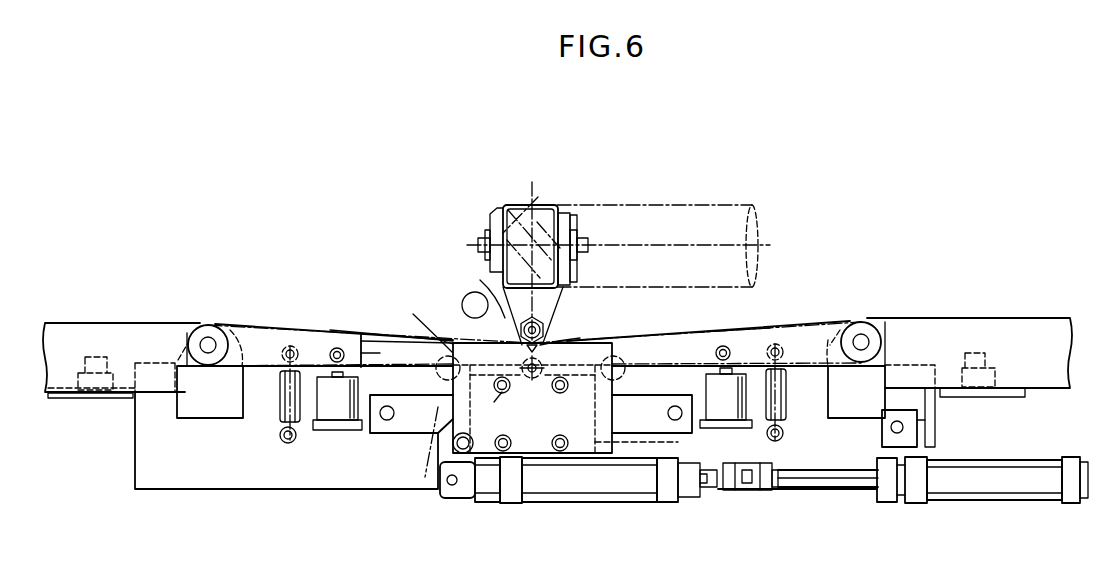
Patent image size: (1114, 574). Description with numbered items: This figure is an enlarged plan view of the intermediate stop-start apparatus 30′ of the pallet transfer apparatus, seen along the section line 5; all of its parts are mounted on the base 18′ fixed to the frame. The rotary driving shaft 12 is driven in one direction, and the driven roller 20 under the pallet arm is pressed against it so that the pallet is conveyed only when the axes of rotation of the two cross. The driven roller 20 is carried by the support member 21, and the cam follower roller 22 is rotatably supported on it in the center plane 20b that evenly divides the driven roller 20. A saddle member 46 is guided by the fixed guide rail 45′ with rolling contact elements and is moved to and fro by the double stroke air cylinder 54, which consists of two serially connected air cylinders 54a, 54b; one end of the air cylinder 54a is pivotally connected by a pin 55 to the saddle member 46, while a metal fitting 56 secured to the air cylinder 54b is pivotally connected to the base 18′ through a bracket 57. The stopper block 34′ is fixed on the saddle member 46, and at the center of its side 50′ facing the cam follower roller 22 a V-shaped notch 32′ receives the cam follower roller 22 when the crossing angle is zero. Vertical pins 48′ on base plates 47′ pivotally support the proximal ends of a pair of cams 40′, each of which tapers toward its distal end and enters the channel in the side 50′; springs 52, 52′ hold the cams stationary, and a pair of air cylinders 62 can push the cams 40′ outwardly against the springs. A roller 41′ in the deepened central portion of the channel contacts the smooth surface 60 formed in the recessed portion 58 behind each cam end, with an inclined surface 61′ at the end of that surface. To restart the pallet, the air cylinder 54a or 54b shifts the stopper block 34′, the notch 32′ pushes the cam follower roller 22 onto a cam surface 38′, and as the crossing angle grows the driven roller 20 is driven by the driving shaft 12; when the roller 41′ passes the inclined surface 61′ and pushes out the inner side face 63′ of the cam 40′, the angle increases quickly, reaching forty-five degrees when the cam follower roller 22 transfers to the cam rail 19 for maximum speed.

The section line 5 is at (532, 157).
The rotary driving shaft 12 is at (657, 206).
The base 18′ is at (251, 478).
The cam rail 19 is at (167, 320).
The driven roller 20 is at (518, 210).
The center plane 20b is at (534, 190).
The support member 21 is at (568, 268).
The cam follower roller 22 is at (548, 327).
The stop-start apparatus 30′ is at (632, 310).
The V-shaped notch 32′ is at (578, 338).
The stopper block 34′ is at (612, 388).
The cam surface 38′ is at (328, 328).
The cam 40′ is at (272, 327).
The roller 41′ is at (536, 378).
The fixed guide rail 45′ is at (408, 422).
The saddle member 46 is at (651, 428).
The base plate 47′ is at (204, 406).
The vertical pin 48′ is at (208, 337).
The side of the stopper block 50′ is at (480, 290).
The spring 52 is at (283, 398).
The spring 52′ is at (787, 377).
The double stroke air cylinder 54 is at (723, 493).
The air cylinder 54a is at (597, 484).
The air cylinder 54b is at (1000, 484).
The pin 55 is at (450, 485).
The metal fitting 56 is at (897, 497).
The support bracket 57 is at (890, 427).
The recessed portion 58 is at (502, 424).
The smooth surface 60 is at (490, 360).
The inclined surface 61′ is at (419, 324).
The air cylinder 62 is at (333, 420).
The inner side face 63′ is at (410, 365).